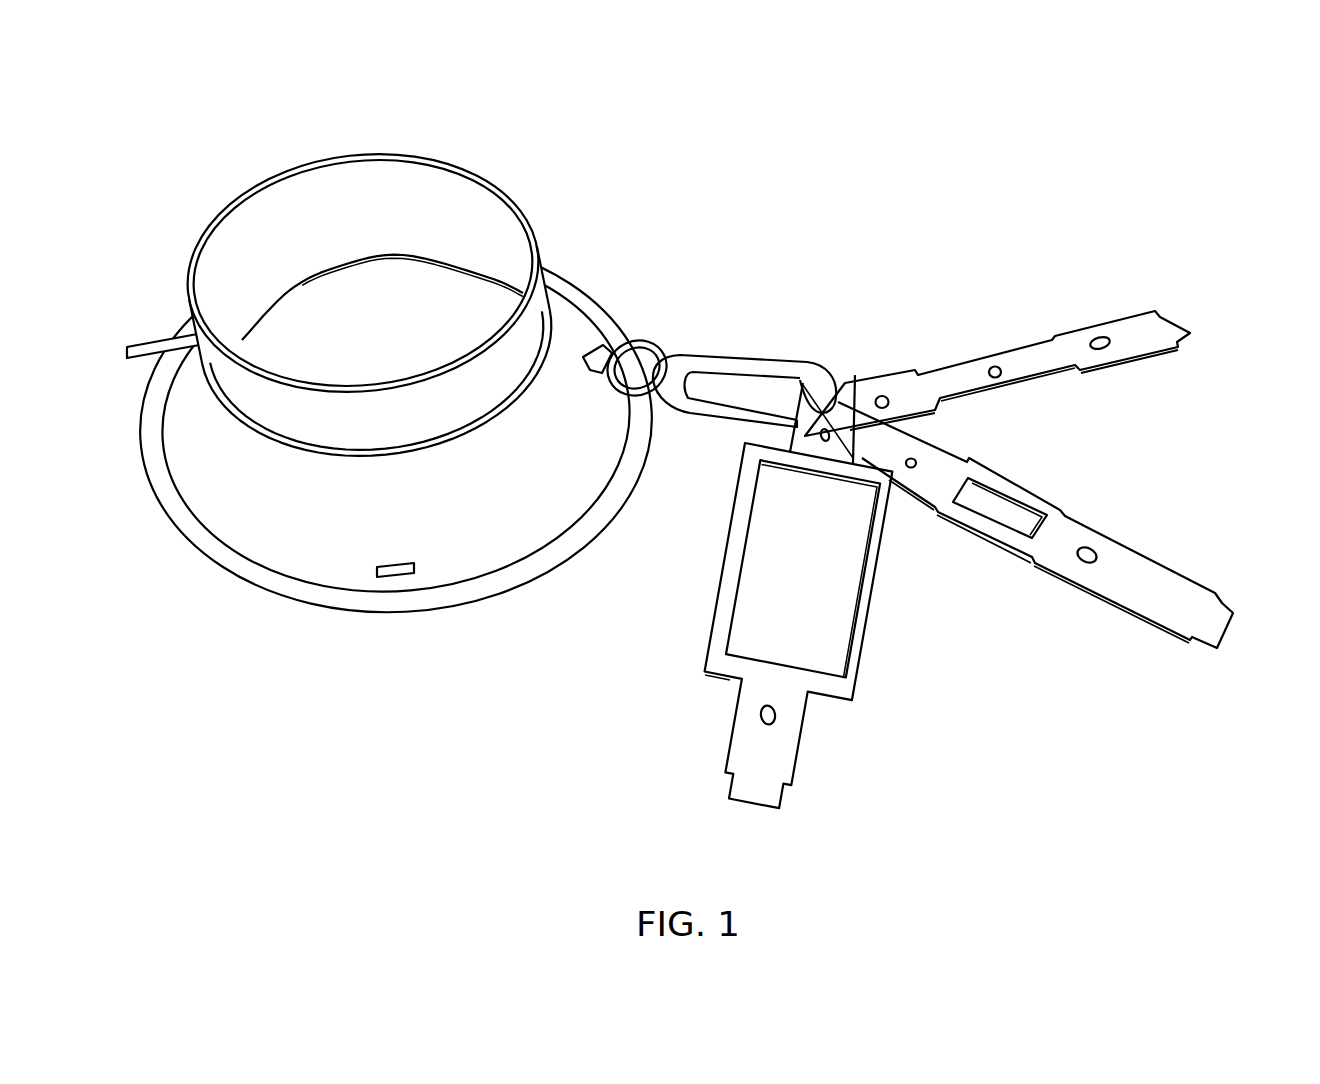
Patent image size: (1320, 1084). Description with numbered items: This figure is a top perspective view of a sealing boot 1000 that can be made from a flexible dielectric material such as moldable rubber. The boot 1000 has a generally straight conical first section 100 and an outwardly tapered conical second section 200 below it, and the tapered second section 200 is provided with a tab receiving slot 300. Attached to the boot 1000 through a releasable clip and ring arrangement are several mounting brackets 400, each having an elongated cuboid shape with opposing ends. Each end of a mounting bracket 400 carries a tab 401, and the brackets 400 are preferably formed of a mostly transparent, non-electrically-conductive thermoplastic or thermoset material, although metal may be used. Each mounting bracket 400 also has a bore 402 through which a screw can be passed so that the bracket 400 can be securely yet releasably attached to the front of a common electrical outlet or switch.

The sealing boot 1000 is at (526, 128).
The first section 100 is at (409, 153).
The second section 200 is at (576, 330).
The tab receiving slot 300 is at (392, 578).
The mounting bracket 400 is at (850, 684).
The tab 401 is at (758, 790).
The bore 402 is at (760, 712).